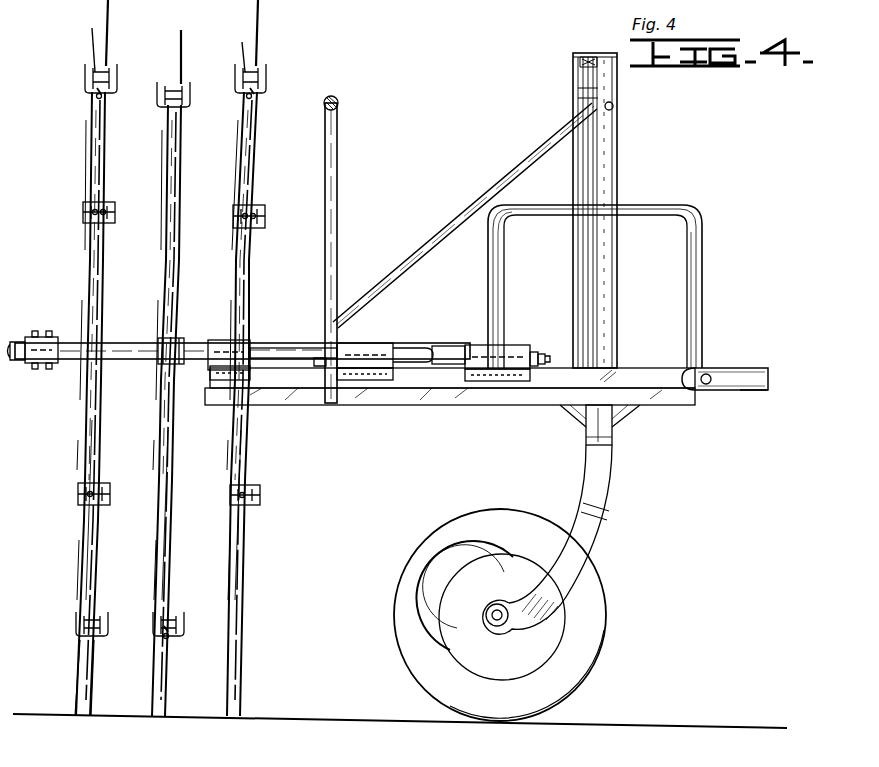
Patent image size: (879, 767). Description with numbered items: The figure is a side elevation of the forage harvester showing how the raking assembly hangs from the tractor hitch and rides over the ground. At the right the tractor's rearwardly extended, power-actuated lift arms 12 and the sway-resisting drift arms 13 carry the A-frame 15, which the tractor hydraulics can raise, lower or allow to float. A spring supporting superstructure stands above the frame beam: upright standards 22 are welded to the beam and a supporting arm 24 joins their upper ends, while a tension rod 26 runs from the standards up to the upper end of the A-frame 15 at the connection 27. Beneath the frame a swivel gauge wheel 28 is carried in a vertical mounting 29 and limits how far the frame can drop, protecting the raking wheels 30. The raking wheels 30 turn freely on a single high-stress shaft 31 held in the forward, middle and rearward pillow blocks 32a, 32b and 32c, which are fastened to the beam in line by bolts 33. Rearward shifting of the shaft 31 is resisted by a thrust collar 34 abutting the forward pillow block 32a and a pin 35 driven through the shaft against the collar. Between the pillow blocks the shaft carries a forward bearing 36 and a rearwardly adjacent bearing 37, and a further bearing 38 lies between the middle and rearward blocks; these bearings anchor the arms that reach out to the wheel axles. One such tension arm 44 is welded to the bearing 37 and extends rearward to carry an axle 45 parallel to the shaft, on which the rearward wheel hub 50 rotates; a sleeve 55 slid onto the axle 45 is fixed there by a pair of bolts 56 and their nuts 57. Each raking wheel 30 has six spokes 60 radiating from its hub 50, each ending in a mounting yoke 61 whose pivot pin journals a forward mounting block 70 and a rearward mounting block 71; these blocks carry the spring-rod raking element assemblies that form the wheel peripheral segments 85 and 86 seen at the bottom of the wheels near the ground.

The lift arms 12 is at (745, 370).
The drift arms 13 is at (750, 392).
The A-frame 15 is at (702, 240).
The upright standards 22 is at (338, 186).
The supporting arm 24 is at (338, 102).
The tension rod 26 is at (497, 180).
The connection point on A-frame 27 is at (614, 106).
The swivel gauge wheel 28 is at (586, 589).
The vertical mounting 29 is at (614, 432).
The raking wheels 30 is at (190, 191).
The shaft 31 is at (548, 356).
The forward pillow block 32a is at (470, 370).
The middle pillow block 32b is at (360, 346).
The rearward pillow block 32c is at (246, 343).
The bolts 33 is at (216, 370).
The thrust collar 34 is at (533, 352).
The pin 35 is at (541, 354).
The forward bearing 36 is at (449, 347).
The rearwardly adjacent bearing 37 is at (402, 349).
The further bearing 38 is at (290, 350).
The tension arm 44 is at (318, 364).
The axle 45 is at (17, 360).
The hub 50 is at (110, 348).
The sleeve 55 is at (50, 343).
The bolts 56 is at (49, 331).
The nuts 57 is at (49, 369).
The spokes 60 is at (102, 445).
The mounting yoke 61 is at (191, 97).
The forward mounting block 70 is at (110, 70).
The rearward mounting block 71 is at (88, 89).
The wheel peripheral segment 85 is at (105, 658).
The wheel peripheral segment 86 is at (72, 656).